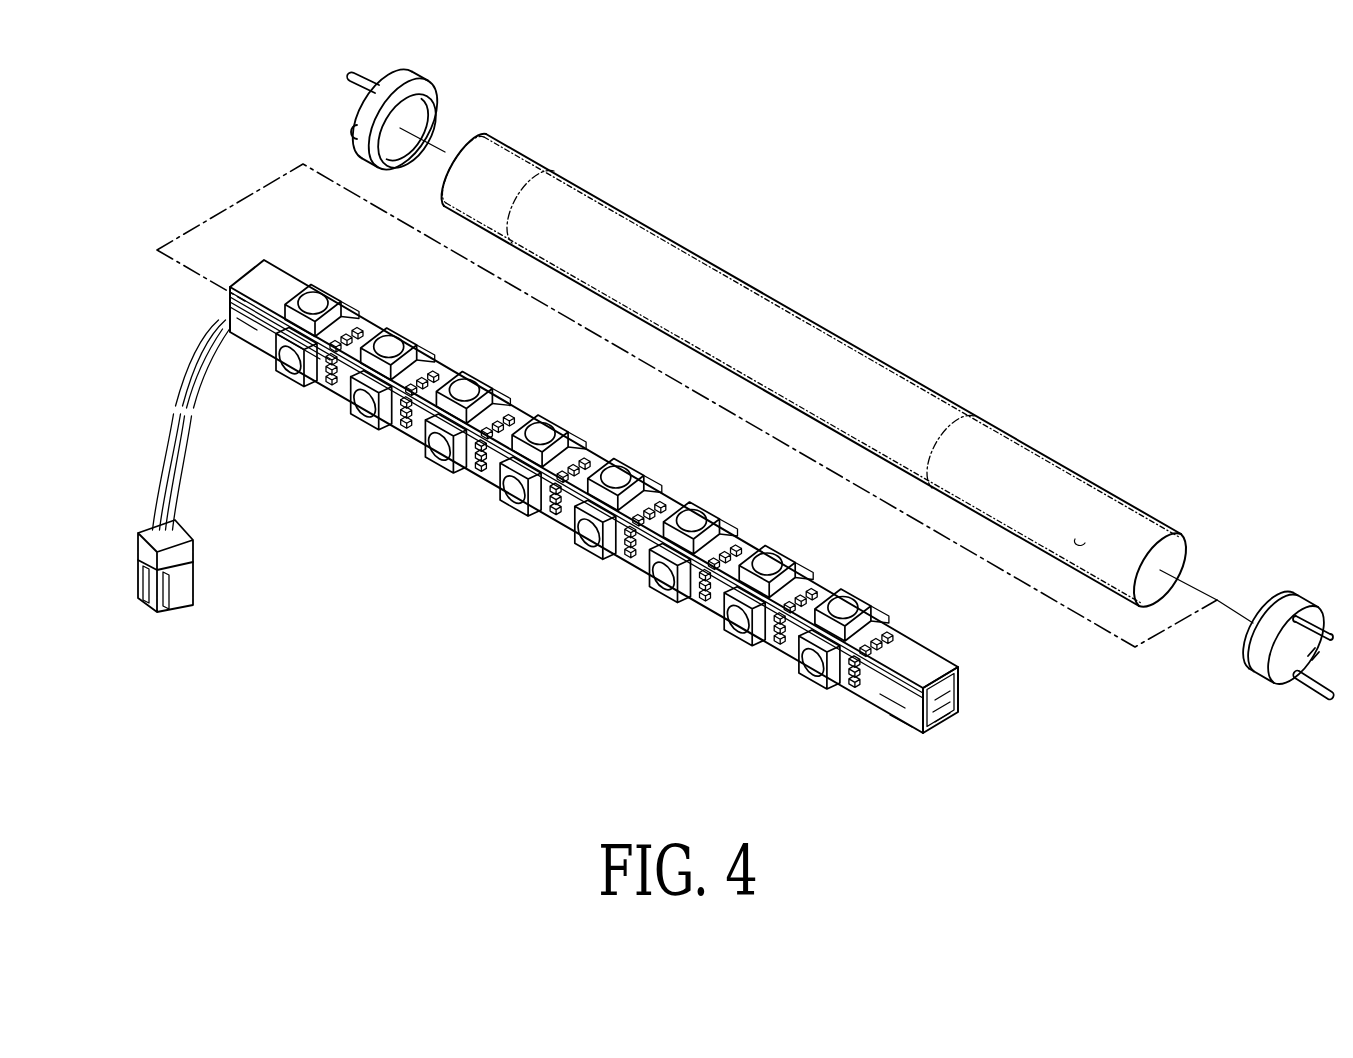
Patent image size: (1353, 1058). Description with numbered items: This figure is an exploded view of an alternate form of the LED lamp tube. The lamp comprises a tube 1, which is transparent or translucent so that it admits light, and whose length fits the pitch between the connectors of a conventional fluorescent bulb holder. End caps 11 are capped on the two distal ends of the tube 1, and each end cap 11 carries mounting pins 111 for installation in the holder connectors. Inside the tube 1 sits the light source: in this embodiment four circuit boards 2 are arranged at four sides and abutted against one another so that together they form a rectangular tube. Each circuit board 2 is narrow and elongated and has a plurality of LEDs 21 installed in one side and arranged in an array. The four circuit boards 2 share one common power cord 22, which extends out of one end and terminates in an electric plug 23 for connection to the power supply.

The tube 1 is at (1244, 663).
The end cap 11 is at (1266, 676).
The mounting pin 111 is at (1330, 701).
The circuit board 2 is at (972, 667).
The LED 21 is at (878, 618).
The power cord 22 is at (163, 478).
The electric plug 23 is at (137, 533).